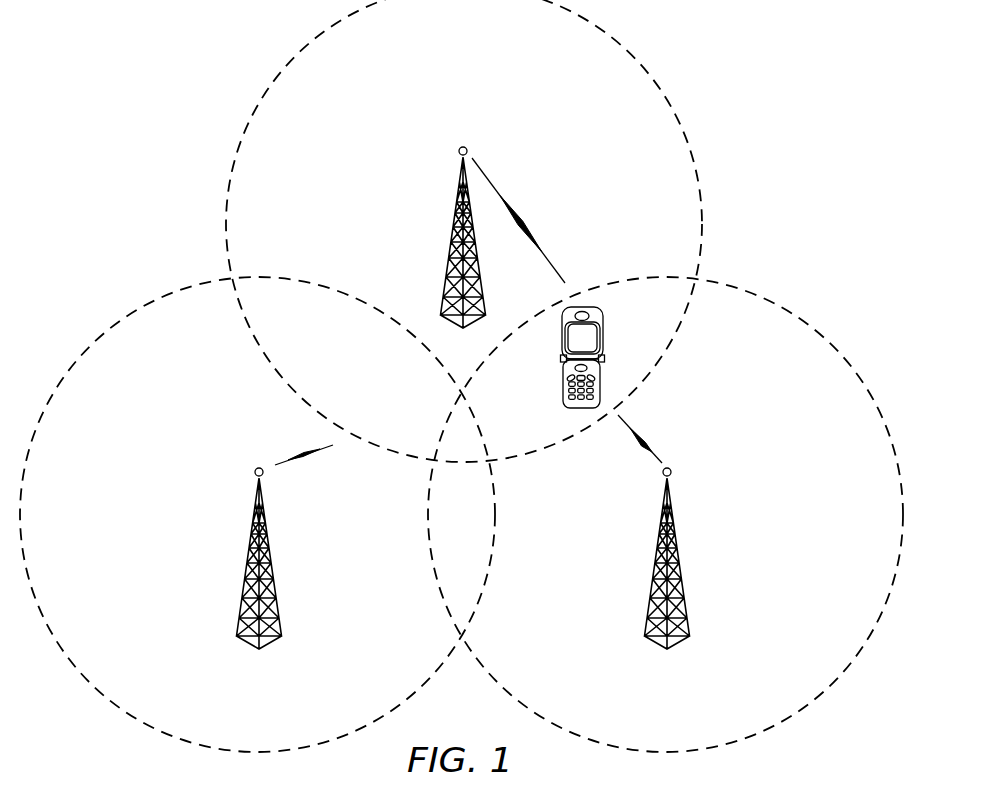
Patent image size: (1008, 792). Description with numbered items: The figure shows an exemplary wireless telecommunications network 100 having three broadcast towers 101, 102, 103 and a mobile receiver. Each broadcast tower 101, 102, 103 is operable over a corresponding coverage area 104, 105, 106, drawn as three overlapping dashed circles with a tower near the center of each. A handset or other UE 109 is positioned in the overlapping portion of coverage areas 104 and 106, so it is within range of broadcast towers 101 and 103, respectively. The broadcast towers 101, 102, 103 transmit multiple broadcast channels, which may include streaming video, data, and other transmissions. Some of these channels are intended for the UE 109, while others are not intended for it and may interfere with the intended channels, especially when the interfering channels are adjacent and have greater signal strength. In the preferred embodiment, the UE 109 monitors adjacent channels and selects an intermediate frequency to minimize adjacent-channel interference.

The wireless telecommunications network 100 is at (133, 56).
The broadcast tower 101 is at (684, 570).
The broadcast tower 102 is at (244, 570).
The broadcast tower 103 is at (452, 247).
The coverage area 104 is at (831, 343).
The coverage area 105 is at (99, 338).
The coverage area 106 is at (655, 38).
The UE 109 is at (563, 383).